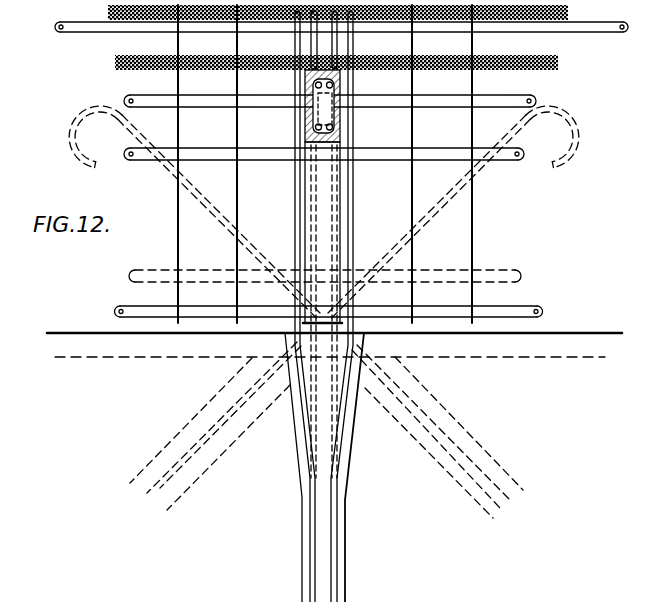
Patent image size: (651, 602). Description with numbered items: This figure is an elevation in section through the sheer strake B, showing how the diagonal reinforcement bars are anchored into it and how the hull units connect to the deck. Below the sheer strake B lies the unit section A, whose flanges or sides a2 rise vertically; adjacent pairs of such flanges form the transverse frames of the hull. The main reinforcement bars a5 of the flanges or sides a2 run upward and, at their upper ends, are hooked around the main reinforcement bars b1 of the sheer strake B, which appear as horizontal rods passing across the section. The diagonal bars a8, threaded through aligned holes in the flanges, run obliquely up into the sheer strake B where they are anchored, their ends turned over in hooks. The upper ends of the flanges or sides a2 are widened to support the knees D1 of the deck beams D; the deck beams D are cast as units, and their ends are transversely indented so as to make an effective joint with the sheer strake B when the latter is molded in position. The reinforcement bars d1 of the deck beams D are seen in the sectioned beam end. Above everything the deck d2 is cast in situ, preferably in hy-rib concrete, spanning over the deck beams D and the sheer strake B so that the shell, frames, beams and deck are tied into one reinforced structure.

The flanges or sides a2 is at (302, 530).
The main reinforcement bars a5 is at (313, 44).
The diagonal bars a8 is at (203, 206).
The deck d2 is at (127, 16).
The main reinforcement bars of the sheer strake b1 is at (199, 103).
The deck beam D is at (339, 93).
The reinforcement bars of the deck beams d1 is at (310, 100).
The knee of the deck beam D1 is at (320, 243).
The sheer strake B is at (350, 161).
The unit section A is at (318, 493).